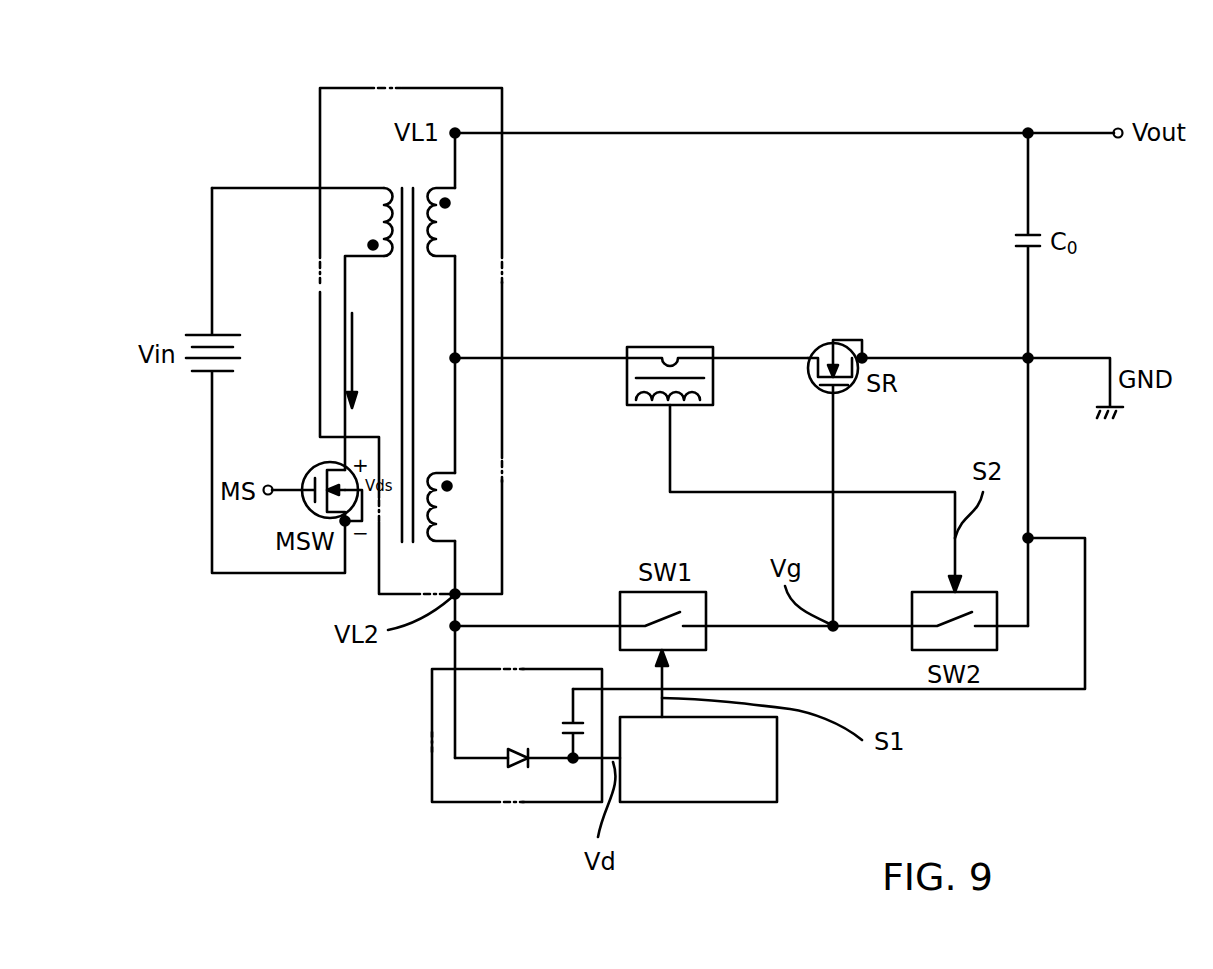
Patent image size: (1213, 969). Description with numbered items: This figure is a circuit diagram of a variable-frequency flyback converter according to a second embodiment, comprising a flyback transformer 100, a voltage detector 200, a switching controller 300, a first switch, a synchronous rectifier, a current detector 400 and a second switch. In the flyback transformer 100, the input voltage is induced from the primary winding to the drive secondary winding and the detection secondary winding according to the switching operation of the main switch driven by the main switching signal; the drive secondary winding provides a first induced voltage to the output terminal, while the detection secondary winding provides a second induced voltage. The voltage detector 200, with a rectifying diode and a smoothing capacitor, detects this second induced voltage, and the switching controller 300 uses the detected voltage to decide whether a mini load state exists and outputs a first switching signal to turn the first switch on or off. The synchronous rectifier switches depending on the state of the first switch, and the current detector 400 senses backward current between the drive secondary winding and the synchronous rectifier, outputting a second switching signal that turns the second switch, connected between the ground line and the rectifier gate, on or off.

The flyback transformer 100 is at (462, 88).
The voltage detector 200 is at (487, 802).
The switching controller 300 is at (668, 802).
The current detector 400 is at (668, 347).